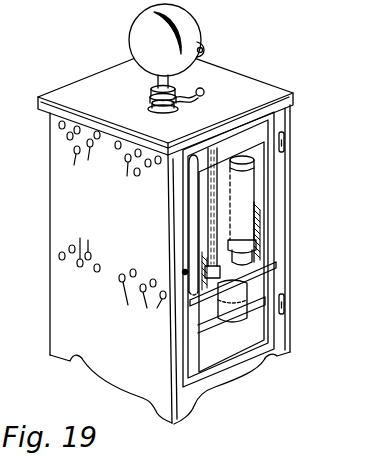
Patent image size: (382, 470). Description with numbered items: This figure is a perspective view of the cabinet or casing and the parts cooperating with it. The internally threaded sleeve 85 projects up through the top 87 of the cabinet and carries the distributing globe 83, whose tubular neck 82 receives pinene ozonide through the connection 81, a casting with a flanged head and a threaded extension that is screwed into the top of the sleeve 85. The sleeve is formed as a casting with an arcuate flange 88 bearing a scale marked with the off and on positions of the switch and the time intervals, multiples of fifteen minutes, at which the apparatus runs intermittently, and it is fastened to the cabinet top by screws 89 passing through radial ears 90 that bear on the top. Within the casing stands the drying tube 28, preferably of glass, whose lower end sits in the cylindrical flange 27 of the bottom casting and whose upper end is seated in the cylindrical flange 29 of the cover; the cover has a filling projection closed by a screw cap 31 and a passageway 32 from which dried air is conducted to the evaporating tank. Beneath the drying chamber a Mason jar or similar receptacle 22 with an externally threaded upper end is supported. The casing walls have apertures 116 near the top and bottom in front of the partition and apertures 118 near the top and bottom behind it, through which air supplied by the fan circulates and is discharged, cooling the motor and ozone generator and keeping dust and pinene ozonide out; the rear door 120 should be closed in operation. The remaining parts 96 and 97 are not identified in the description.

The receptacle 22 is at (238, 293).
The cylindrical flange 27 is at (252, 227).
The tube 28 is at (243, 188).
The cylindrical flange 29 is at (287, 160).
The screw cap 31 is at (245, 157).
The passageway 32 is at (223, 204).
The connection 81 is at (156, 90).
The tubular neck 82 is at (137, 66).
The distributing globe 83 is at (131, 31).
The sleeve 85 is at (150, 96).
The top 87 is at (80, 96).
The arcuate flange 88 is at (150, 105).
The screws 89 is at (158, 111).
The radial ears 90 is at (164, 113).
The tube 96 is at (204, 95).
The tube fitting 97 is at (205, 88).
The apertures 116 is at (140, 231).
The apertures 118 is at (81, 196).
The rear door 120 is at (267, 198).